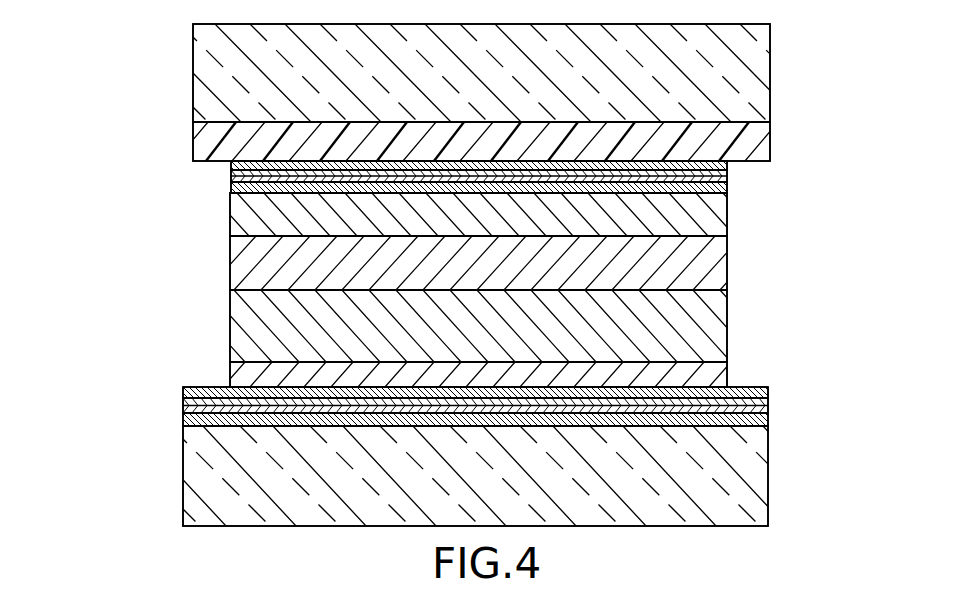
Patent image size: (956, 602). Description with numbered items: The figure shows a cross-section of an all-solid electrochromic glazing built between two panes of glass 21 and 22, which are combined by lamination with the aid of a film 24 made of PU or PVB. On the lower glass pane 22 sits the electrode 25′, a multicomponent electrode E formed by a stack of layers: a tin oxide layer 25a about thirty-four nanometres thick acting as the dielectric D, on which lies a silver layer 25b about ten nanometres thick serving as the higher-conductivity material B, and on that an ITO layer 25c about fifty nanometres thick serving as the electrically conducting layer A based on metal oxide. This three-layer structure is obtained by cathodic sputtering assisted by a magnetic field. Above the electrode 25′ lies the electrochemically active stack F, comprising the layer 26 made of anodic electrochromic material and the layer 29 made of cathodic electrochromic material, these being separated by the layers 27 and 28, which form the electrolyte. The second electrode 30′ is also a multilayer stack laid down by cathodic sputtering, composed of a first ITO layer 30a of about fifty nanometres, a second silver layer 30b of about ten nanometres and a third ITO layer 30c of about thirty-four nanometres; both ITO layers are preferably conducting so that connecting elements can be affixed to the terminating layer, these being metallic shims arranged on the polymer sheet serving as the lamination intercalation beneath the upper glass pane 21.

The glass pane 21 is at (757, 79).
The film 24 is at (757, 150).
The first layer of ITO 30a is at (231, 166).
The second layer of silver 30b is at (231, 178).
The third layer of ITO 30c is at (231, 188).
The second electrode 30′ is at (733, 163).
The layer of cathodic electrochromic material 29 is at (713, 212).
The electrolyte layer 28 is at (712, 260).
The electrolyte layer 27 is at (712, 335).
The layer of anodic electrochromic material 26 is at (713, 370).
The layer of ITO 25c is at (183, 392).
The layer of silver 25b is at (183, 407).
The layer of SnO2 25a is at (183, 420).
The electrode 25′ is at (778, 388).
The glass pane 22 is at (755, 491).
The electrochemically active layer F is at (226, 193).
The dielectric D is at (98, 364).
The higher-conductivity material B is at (98, 400).
The electrically conducting layer A is at (98, 434).
The multicomponent electrode E is at (838, 405).